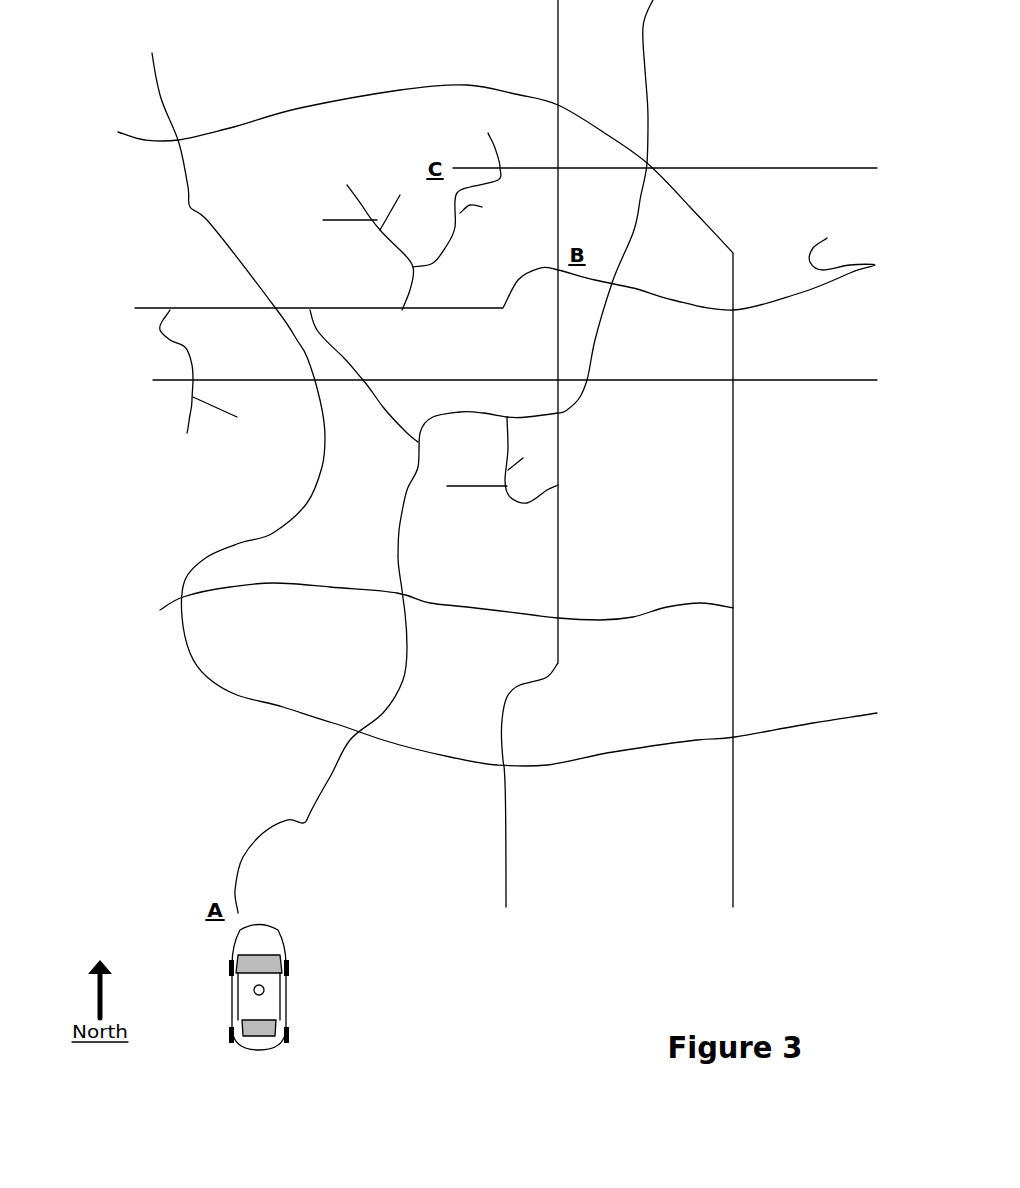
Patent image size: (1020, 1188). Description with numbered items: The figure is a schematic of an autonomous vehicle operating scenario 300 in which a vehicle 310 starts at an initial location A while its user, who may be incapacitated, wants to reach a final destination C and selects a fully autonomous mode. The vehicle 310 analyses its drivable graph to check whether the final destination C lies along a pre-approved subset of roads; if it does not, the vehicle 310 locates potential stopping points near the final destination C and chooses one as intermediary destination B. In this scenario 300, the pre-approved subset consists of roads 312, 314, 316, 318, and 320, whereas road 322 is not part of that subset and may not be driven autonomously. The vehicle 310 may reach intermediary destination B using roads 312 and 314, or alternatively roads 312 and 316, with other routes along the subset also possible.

The autonomous vehicle operating scenario 300 is at (82, 280).
The vehicle 310 is at (282, 985).
The road 312 is at (327, 777).
The road 314 is at (627, 290).
The road 316 is at (558, 238).
The road 318 is at (403, 292).
The road 320 is at (240, 543).
The road 322 is at (802, 168).